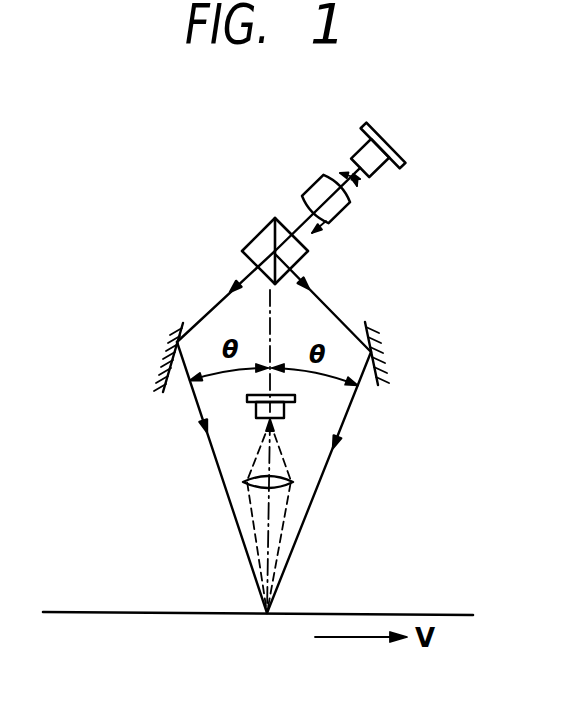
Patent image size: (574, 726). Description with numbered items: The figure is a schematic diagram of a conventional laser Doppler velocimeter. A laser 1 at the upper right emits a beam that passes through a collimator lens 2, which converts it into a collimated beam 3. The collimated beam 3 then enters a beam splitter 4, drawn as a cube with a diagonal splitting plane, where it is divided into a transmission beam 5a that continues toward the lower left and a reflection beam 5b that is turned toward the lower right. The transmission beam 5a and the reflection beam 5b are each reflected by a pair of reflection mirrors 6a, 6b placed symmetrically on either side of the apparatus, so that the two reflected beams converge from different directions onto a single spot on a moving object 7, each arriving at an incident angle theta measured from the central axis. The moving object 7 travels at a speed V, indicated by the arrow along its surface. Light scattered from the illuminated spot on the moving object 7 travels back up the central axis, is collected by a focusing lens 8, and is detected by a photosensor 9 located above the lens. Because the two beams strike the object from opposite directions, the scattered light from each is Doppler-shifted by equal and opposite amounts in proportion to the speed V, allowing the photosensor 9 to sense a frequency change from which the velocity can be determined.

The laser 1 is at (356, 152).
The collimator lens 2 is at (316, 174).
The collimated beam 3 is at (301, 213).
The beam splitter 4 is at (253, 240).
The transmission beam 5a is at (220, 302).
The reflection beam 5b is at (326, 302).
The reflection mirror 6a is at (183, 323).
The reflection mirror 6b is at (366, 322).
The moving object 7 is at (114, 612).
The focusing lens 8 is at (243, 482).
The photosensor 9 is at (256, 408).